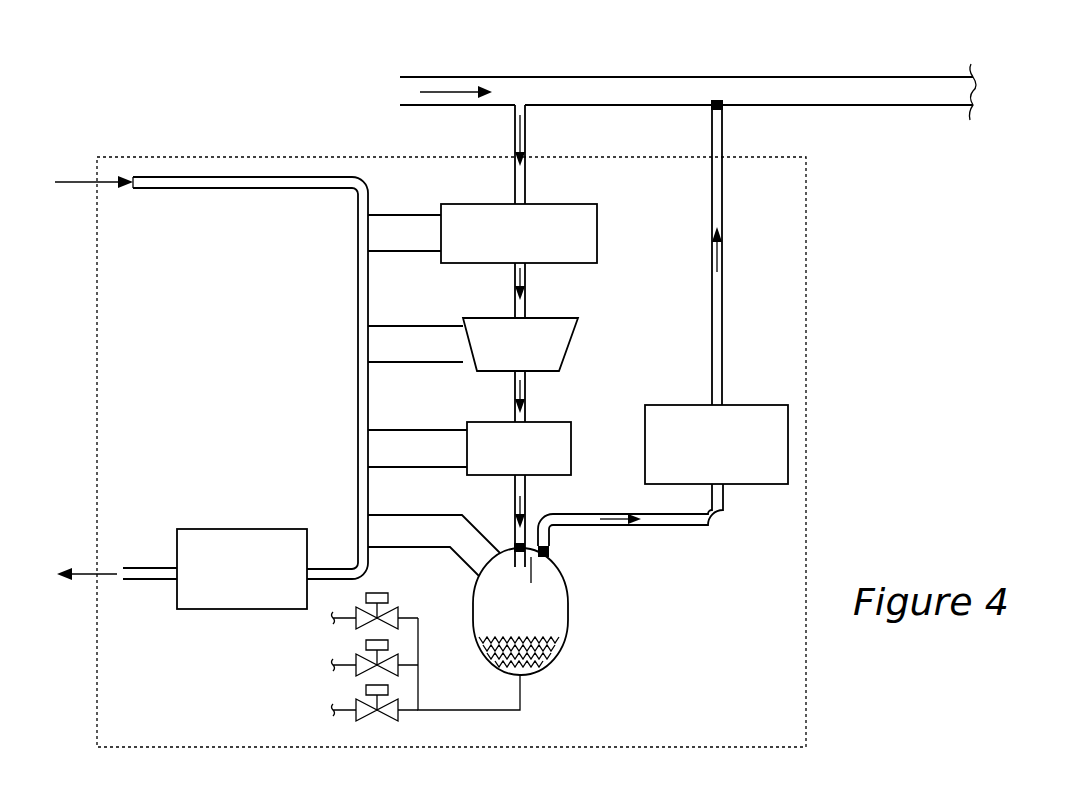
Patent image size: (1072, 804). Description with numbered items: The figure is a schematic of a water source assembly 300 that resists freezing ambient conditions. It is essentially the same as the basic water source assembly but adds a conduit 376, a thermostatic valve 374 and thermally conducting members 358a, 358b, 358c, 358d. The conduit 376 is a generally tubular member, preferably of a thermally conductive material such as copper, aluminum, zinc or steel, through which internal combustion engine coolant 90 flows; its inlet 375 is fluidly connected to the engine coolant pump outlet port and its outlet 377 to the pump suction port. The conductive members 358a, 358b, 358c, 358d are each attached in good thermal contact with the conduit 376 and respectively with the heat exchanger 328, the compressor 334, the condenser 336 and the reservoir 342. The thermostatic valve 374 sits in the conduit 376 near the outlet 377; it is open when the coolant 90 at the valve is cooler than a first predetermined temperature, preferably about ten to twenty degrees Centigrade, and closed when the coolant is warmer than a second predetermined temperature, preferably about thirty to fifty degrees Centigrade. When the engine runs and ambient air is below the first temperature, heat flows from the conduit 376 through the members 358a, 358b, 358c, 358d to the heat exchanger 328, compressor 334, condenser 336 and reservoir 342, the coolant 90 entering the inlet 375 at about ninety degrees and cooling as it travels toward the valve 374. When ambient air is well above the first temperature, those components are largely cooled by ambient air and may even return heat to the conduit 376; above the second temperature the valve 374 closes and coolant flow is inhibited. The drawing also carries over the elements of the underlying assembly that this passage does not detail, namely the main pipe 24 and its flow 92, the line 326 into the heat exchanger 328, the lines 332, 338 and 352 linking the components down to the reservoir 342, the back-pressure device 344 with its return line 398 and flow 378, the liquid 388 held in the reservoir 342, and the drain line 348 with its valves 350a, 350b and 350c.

The main coolant pipe 24 is at (592, 77).
The coolant flow 92 is at (438, 93).
The ICE coolant 90 is at (75, 182).
The water source assembly 300 is at (814, 412).
The inlet line 326 is at (515, 178).
The heat exchanger 328 is at (507, 255).
The line 332 is at (515, 281).
The compressor 334 is at (508, 361).
The condenser 336 is at (507, 469).
The line 338 is at (527, 388).
The reservoir 342 is at (575, 628).
The back-pressure device 344 is at (704, 475).
The drain line 348 is at (437, 712).
The valve 350a is at (392, 700).
The valve 350b is at (392, 655).
The valve 350c is at (392, 608).
The line 352 is at (515, 494).
The thermally conducting member 358a is at (426, 244).
The thermally conducting member 358b is at (443, 355).
The thermally conducting member 358c is at (438, 460).
The thermally conducting member 358d is at (443, 541).
The thermostatic valve 374 is at (230, 601).
The conduit inlet 375 is at (131, 190).
The conduit 376 is at (300, 189).
The conduit outlet 377 is at (117, 582).
The flow 378 is at (618, 524).
The liquid 388 is at (540, 668).
The return line 398 is at (648, 527).